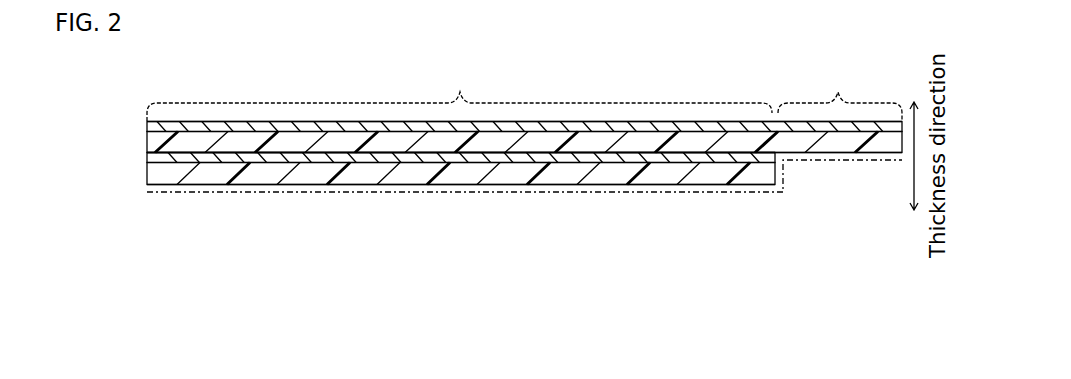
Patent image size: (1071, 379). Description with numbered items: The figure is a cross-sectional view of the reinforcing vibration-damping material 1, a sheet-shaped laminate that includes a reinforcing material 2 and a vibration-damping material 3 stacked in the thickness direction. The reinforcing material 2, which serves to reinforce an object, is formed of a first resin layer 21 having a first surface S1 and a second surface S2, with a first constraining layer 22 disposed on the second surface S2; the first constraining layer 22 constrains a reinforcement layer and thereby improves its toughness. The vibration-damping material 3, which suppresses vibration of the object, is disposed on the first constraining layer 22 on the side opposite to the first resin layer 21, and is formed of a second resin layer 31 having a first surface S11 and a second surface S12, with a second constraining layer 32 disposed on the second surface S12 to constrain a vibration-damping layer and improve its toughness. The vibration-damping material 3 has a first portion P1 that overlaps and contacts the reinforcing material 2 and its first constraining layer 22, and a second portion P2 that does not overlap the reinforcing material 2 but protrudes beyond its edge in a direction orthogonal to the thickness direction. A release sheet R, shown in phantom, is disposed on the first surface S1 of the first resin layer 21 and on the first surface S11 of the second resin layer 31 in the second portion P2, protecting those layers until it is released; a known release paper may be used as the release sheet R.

The reinforcing vibration-damping material 1 is at (479, 202).
The reinforcing material 2 is at (416, 178).
The vibration-damping material 3 is at (479, 128).
The first resin layer 21 is at (147, 175).
The first constraining layer 22 is at (147, 159).
The second resin layer 31 is at (147, 143).
The second constraining layer 32 is at (147, 124).
The release sheet R is at (332, 192).
The first portion P1 is at (459, 93).
The second portion P2 is at (840, 93).
The first surface S1 is at (431, 185).
The second surface S2 is at (500, 153).
The first surface S11 is at (558, 153).
The second surface S12 is at (608, 123).